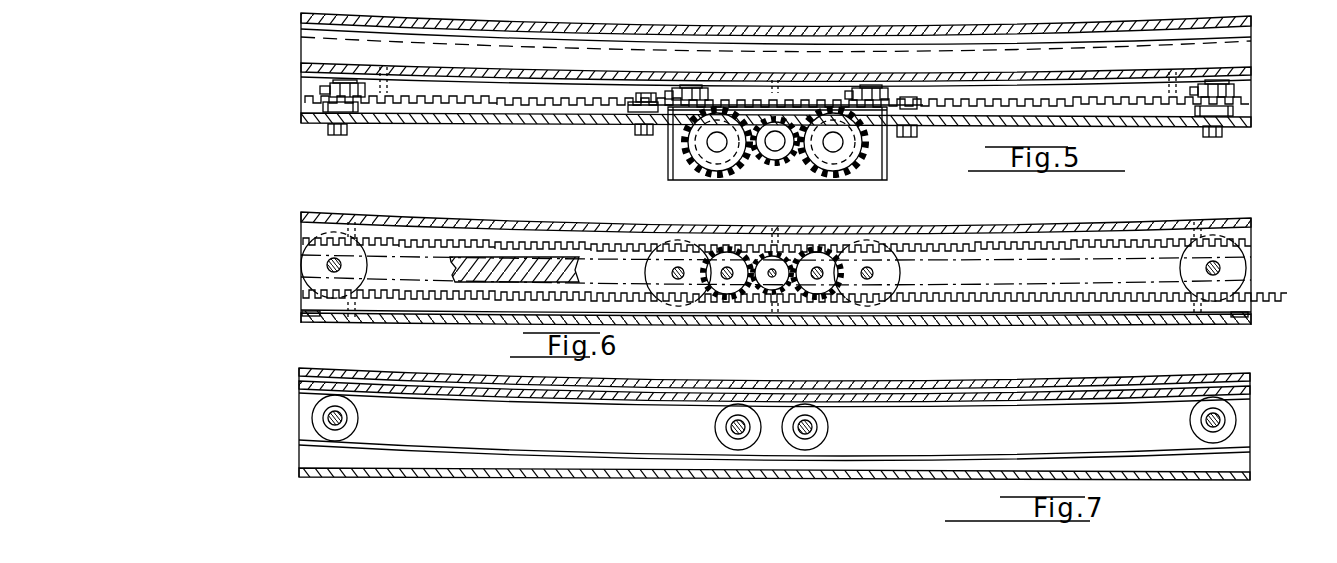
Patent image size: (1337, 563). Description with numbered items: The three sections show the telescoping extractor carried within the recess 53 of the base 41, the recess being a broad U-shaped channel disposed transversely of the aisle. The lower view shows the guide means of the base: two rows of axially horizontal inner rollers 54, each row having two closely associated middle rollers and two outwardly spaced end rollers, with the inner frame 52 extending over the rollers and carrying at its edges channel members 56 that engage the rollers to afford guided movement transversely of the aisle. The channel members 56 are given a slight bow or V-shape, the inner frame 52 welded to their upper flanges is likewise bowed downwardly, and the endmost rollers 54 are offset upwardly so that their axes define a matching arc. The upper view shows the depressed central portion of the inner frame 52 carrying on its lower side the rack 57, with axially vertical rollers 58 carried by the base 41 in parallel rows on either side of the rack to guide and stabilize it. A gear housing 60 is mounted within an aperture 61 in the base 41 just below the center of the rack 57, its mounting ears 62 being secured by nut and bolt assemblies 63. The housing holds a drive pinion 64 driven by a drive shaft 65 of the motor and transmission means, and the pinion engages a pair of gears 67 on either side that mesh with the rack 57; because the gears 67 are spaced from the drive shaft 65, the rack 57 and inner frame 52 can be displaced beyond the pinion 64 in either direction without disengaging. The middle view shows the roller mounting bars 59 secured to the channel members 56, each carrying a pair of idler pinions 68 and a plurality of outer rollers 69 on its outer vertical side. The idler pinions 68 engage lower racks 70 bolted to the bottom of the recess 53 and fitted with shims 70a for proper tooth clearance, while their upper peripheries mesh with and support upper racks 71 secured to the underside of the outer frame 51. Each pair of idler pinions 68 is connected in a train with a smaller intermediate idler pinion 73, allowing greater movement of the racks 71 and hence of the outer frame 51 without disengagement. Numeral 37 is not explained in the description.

In FIG. 5, the frame member 37 is at (630, 22).
In FIG. 6, the base 41 is at (1248, 317).
In FIG. 6, the outer frame 51 is at (1107, 224).
In FIG. 7, the outer frame 51 is at (918, 388).
In FIG. 5, the inner frame 52 is at (970, 75).
In FIG. 7, the inner frame 52 is at (995, 394).
In FIG. 6, the recess 53 is at (1133, 316).
In FIG. 7, the recess 53 is at (535, 479).
In FIG. 7, the inner rollers 54 is at (311, 412).
In FIG. 7, the channel members 56 is at (648, 488).
In FIG. 5, the rack 57 is at (1092, 67).
In FIG. 5, the axially vertical rollers 58 is at (318, 89).
In FIG. 6, the roller mounting bars 59 is at (503, 257).
In FIG. 5, the gear housing 60 is at (887, 172).
In FIG. 5, the aperture 61 is at (670, 133).
In FIG. 5, the mounting ears 62 is at (622, 100).
In FIG. 5, the nut and bolt assemblies 63 is at (905, 100).
In FIG. 5, the drive pinion 64 is at (800, 162).
In FIG. 5, the drive shaft 65 is at (775, 150).
In FIG. 5, the gears 67 is at (690, 160).
In FIG. 6, the idler pinions 68 is at (728, 289).
In FIG. 6, the outer rollers 69 is at (313, 265).
In FIG. 6, the lower racks 70 is at (1100, 308).
In FIG. 6, the shims 70a is at (300, 312).
In FIG. 6, the upper racks 71 is at (960, 240).
In FIG. 6, the intermediate idler pinion 73 is at (767, 302).